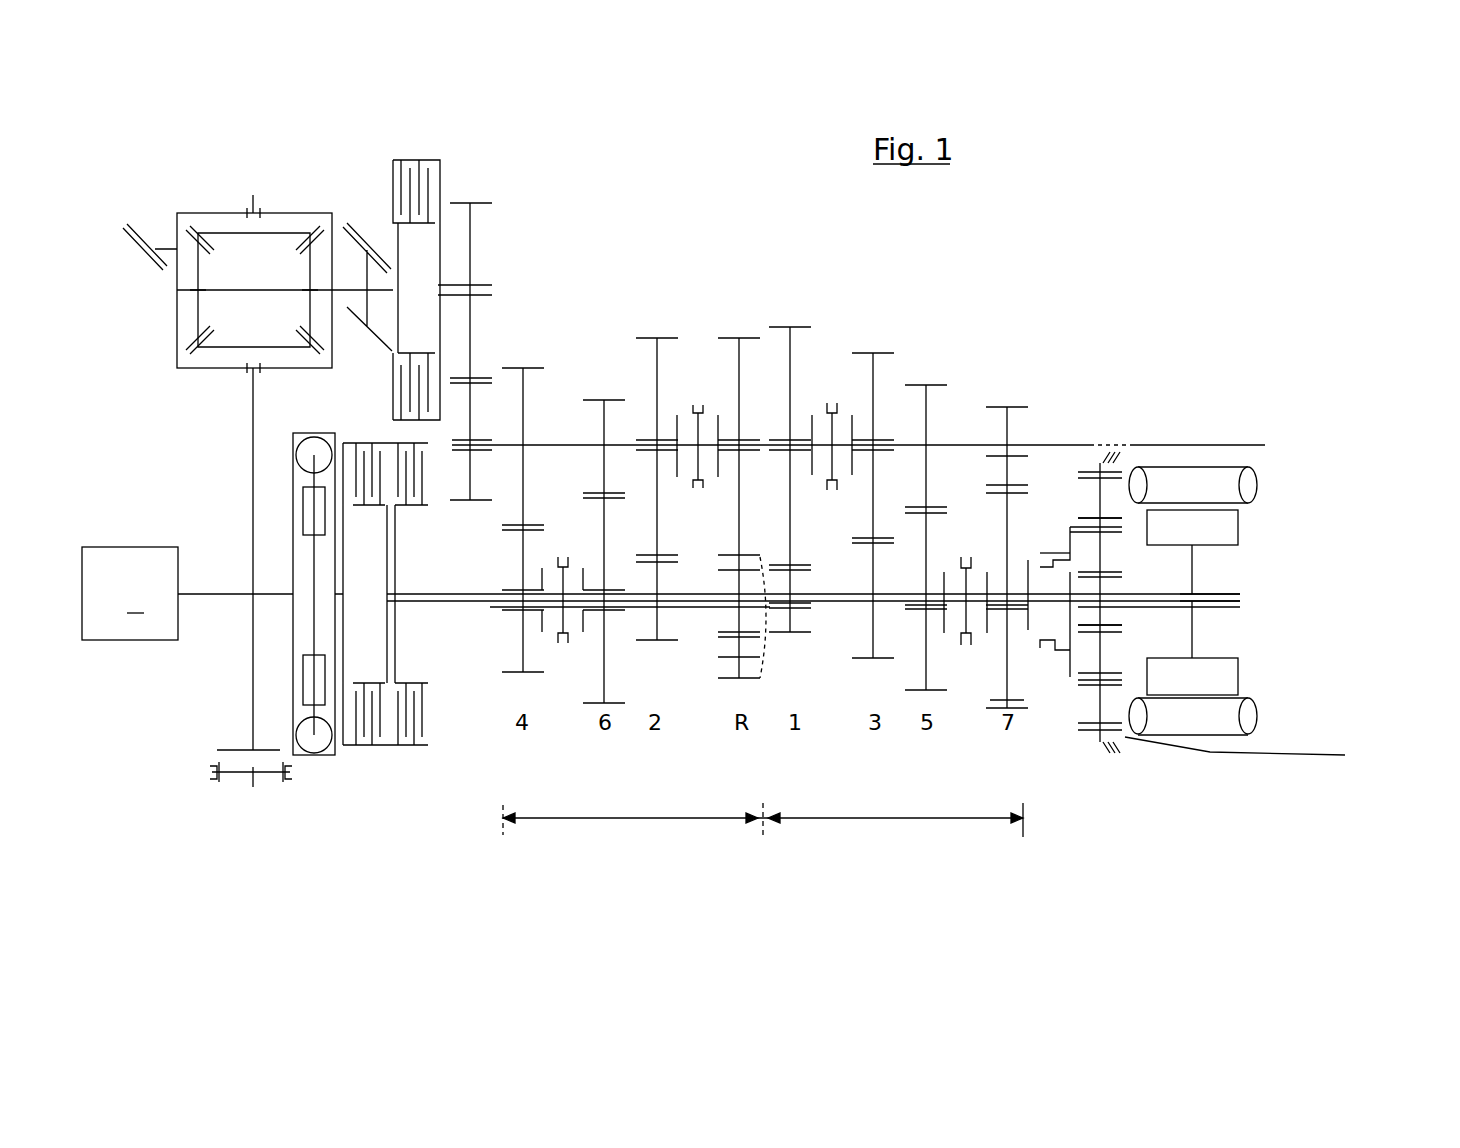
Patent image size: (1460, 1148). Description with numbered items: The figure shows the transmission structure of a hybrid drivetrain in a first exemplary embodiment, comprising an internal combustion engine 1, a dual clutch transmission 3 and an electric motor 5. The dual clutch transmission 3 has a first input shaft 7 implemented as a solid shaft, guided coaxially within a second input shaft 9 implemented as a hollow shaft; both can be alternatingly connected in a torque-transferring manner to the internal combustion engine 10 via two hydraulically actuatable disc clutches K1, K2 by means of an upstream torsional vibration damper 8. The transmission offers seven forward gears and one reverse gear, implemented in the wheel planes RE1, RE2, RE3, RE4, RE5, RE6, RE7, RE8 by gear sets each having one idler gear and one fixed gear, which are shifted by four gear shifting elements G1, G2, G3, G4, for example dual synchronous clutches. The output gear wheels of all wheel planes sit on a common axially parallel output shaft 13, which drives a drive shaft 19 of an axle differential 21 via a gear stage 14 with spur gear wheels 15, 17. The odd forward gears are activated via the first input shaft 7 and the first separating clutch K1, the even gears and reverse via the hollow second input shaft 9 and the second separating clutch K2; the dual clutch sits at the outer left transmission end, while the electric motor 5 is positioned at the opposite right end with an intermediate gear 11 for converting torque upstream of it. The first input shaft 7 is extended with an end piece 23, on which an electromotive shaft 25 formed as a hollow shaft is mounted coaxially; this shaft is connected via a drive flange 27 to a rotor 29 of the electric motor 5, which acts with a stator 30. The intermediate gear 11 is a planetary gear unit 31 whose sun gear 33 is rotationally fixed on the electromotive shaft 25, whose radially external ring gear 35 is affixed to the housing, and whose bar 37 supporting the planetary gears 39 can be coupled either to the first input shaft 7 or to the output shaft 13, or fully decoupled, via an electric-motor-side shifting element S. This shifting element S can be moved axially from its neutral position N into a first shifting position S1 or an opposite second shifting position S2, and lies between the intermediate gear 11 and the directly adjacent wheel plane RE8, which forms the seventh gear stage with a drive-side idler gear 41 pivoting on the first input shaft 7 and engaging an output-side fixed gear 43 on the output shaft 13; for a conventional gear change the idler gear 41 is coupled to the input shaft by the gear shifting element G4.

The internal combustion engine 1 is at (130, 593).
The dual clutch transmission 3 is at (1023, 870).
The electric motor 5 is at (1269, 515).
The first input shaft 7 is at (835, 592).
The torsional vibration damper 8 is at (320, 756).
The second input shaft 9 is at (445, 590).
The internal combustion engine 10 is at (210, 595).
The intermediate gear 11 is at (1135, 757).
The output shaft 13 is at (557, 440).
The gear stage 14 is at (559, 335).
The spur gear wheel 15 is at (470, 407).
The spur gear wheel 17 is at (472, 243).
The drive shaft 19 is at (398, 292).
The axle differential 21 is at (205, 213).
The end piece 23 is at (1042, 600).
The electromotive shaft 25 is at (1269, 576).
The drive flange 27 is at (1195, 565).
The rotor 29 is at (1228, 527).
The stator 30 is at (1222, 483).
The planetary gear unit 31 is at (1266, 693).
The sun gear 33 is at (1100, 617).
The ring gear 35 is at (1260, 758).
The bar 37 is at (1072, 655).
The planetary gears 39 is at (1100, 703).
The idler gear 41 is at (1005, 710).
The fixed gear 43 is at (1007, 460).
The wheel plane RE1 is at (527, 503).
The wheel plane RE2 is at (612, 535).
The wheel plane RE3 is at (664, 472).
The wheel plane RE4 is at (737, 491).
The wheel plane RE5 is at (799, 462).
The wheel plane RE6 is at (879, 490).
The wheel plane RE7 is at (927, 521).
The electric-motor-side wheel plane RE8 is at (1014, 541).
The gear shifting element G1 is at (564, 582).
The gear shifting element G2 is at (698, 427).
The gear shifting element G3 is at (833, 428).
The gear shifting element G4 is at (966, 583).
The first separating clutch K1 is at (385, 615).
The second separating clutch K2 is at (412, 615).
The electric-motor-side shifting element S is at (1183, 380).
The first shifting position S1 is at (1070, 558).
The second shifting position S2 is at (1028, 578).
The neutral position N is at (1048, 560).